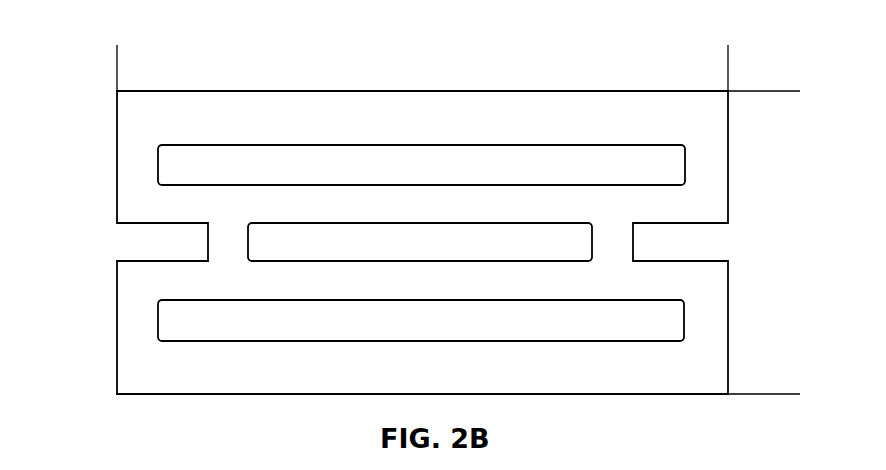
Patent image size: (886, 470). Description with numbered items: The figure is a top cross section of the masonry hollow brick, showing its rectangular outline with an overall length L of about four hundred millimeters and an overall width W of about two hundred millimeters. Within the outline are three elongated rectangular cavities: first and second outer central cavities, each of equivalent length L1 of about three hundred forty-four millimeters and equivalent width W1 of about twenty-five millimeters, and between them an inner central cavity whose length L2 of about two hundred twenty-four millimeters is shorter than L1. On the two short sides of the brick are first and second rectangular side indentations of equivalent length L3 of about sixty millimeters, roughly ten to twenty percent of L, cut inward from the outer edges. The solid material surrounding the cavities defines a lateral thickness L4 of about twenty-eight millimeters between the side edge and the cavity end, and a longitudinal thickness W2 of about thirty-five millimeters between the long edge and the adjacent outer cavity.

The length of the masonry hollow brick L is at (728, 53).
The width of the masonry hollow brick W is at (790, 91).
The length of the first and second outer central cavities L1 is at (160, 163).
The length of the inner central cavity L2 is at (250, 243).
The length of the first and second rectangular side indentations L3 is at (208, 243).
The lateral thickness of the masonry hollow brick L4 is at (80, 323).
The width of the first and second outer central cavities W1 is at (421, 270).
The longitudinal thickness of the masonry hollow brick W2 is at (159, 53).